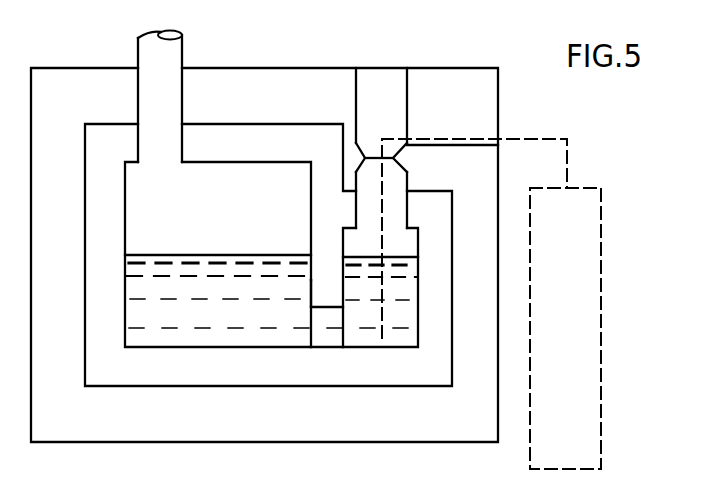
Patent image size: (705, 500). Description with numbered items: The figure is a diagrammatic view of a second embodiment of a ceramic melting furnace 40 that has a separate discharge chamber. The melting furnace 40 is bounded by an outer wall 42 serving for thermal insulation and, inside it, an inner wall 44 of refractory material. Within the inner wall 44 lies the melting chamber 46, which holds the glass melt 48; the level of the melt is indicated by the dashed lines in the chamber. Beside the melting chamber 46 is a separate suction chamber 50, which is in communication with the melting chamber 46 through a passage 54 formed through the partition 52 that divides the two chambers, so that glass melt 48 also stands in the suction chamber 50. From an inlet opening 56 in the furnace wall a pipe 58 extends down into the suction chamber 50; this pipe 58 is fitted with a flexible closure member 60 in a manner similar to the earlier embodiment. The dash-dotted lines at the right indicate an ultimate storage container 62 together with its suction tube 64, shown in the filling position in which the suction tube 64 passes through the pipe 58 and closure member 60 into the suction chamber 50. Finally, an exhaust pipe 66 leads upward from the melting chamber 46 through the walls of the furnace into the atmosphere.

The melting furnace 40 is at (62, 450).
The outer wall 42 is at (124, 443).
The inner wall 44 is at (284, 364).
The melting chamber 46 is at (222, 175).
The glass melt 48 is at (252, 266).
The suction chamber 50 is at (405, 340).
The partition 52 is at (318, 291).
The passage 54 is at (332, 338).
The inlet opening 56 is at (385, 92).
The pipe 58 is at (408, 102).
The flexible closure member 60 is at (403, 168).
The ultimate storage container 62 is at (601, 333).
The suction tube 64 is at (528, 140).
The exhaust pipe 66 is at (172, 58).